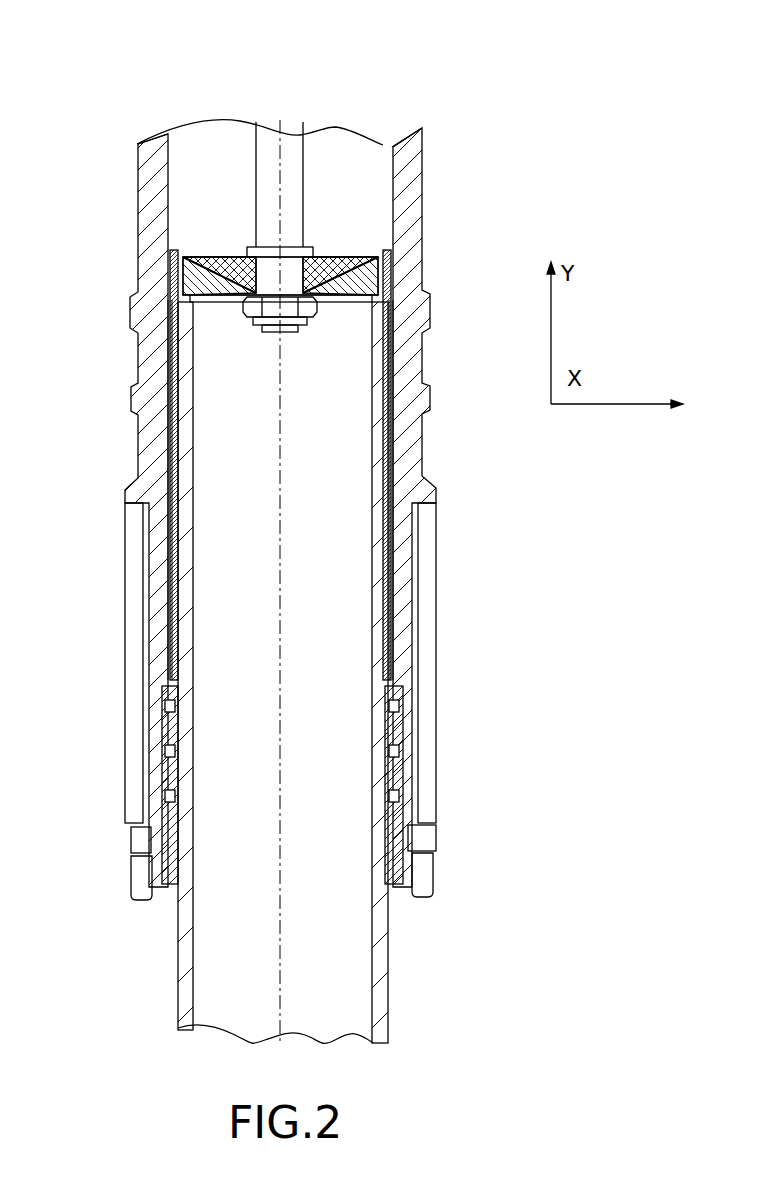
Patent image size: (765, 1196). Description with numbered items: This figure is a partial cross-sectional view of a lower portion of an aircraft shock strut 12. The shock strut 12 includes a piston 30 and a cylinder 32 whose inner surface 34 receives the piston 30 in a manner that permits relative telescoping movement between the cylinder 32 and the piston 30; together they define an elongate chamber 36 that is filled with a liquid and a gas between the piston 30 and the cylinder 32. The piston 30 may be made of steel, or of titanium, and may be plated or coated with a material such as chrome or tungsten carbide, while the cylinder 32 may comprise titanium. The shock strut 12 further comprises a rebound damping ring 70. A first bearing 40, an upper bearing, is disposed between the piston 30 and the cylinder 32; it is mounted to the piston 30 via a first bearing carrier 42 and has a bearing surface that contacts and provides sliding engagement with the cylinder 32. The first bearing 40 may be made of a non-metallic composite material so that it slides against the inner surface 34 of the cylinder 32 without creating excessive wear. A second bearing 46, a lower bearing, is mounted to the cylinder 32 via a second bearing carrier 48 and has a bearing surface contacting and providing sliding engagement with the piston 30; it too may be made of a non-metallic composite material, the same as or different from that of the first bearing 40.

The aircraft shock strut 12 is at (505, 656).
The piston 30 is at (388, 1010).
The cylinder 32 is at (139, 427).
The inner surface 34 is at (166, 142).
The elongate chamber 36 is at (221, 142).
The first bearing 40 is at (168, 298).
The first bearing carrier 42 is at (181, 236).
The second bearing 46 is at (188, 797).
The second bearing carrier 48 is at (150, 881).
The rebound damping ring 70 is at (168, 355).